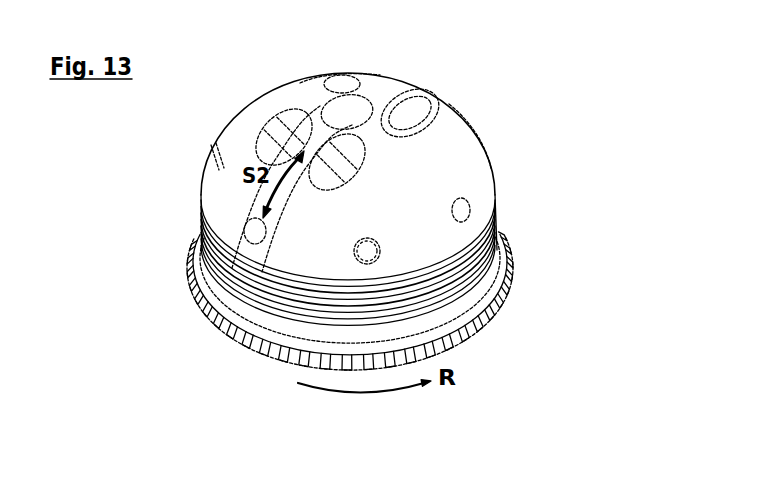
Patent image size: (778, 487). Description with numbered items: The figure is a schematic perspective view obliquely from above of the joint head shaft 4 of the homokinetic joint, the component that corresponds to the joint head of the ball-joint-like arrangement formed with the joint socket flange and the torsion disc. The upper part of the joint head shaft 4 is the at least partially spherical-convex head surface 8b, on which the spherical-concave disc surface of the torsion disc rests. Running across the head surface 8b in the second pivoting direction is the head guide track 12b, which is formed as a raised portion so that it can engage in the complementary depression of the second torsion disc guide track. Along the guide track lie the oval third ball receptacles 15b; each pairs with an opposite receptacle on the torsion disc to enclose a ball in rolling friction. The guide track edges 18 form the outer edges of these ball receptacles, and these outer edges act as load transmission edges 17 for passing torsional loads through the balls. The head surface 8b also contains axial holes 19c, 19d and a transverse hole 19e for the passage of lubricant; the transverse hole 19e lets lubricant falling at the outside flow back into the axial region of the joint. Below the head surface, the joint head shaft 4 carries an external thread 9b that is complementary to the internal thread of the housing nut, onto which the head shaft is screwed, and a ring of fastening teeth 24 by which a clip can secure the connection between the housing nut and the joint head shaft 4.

The joint head shaft 4 is at (617, 173).
The spherical-convex head surface 8b is at (474, 180).
The external thread 9b is at (186, 218).
The head guide track 12b is at (411, 76).
The third ball receptacle 15b is at (265, 148).
The load transmission edge 17 is at (363, 90).
The guide track edge 18 is at (247, 200).
The axial hole 19c is at (493, 132).
The axial hole 19d is at (337, 103).
The transverse hole 19e is at (462, 210).
The fastening teeth 24 is at (210, 322).